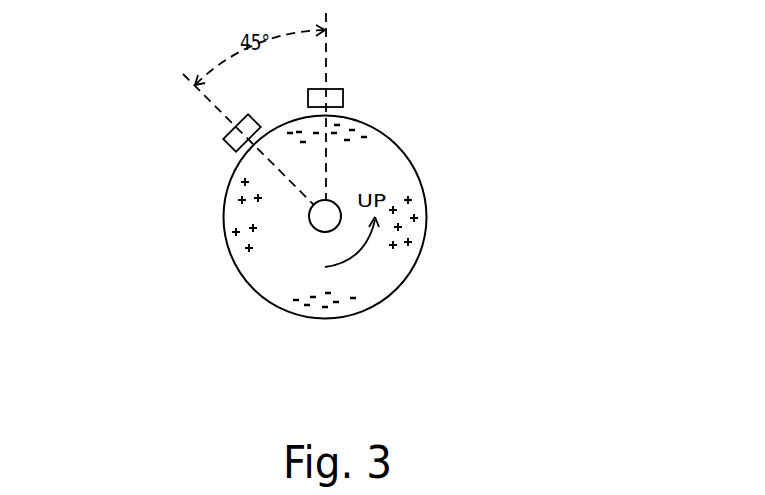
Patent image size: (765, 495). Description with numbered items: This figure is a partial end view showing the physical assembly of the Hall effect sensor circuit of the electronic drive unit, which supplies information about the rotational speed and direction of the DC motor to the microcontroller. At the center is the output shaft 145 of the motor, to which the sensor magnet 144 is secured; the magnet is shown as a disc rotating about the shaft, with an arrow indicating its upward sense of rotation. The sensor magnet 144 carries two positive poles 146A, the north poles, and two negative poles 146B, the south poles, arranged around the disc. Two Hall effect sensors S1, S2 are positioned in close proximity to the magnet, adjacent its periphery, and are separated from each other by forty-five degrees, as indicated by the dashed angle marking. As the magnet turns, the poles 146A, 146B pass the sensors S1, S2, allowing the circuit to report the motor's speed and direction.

The sensor magnet 144 is at (253, 290).
The output shaft 145 is at (340, 202).
The positive poles 146A is at (227, 260).
The negative poles 146B is at (383, 122).
The Hall effect sensor S1 is at (343, 101).
The Hall effect sensor S2 is at (233, 145).